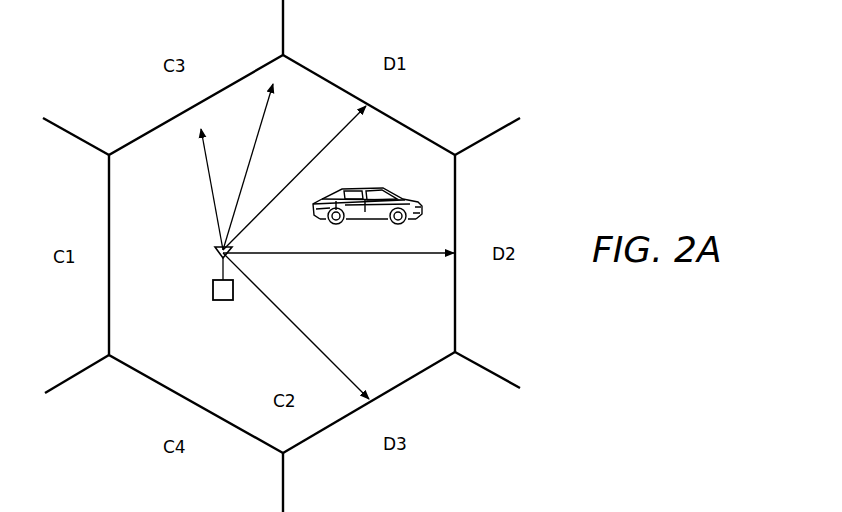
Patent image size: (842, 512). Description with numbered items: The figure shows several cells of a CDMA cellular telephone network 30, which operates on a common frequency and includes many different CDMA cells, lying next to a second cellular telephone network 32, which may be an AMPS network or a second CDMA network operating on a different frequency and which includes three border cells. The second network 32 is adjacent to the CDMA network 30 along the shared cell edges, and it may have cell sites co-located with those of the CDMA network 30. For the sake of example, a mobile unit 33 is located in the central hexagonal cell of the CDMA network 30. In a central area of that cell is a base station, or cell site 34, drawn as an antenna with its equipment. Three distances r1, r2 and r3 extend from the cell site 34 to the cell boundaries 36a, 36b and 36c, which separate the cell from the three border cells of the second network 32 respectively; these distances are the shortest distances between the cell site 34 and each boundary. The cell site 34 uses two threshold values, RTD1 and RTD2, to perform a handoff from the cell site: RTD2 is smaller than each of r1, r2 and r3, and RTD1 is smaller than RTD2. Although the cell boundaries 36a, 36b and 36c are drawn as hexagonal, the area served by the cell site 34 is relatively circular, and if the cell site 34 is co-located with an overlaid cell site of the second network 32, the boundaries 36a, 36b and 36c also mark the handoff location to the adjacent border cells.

The CDMA cellular telephone network 30 is at (133, 78).
The second cellular telephone network 32 is at (434, 72).
The mobile unit 33 is at (410, 201).
The cell site 34 is at (216, 254).
The cell boundary 36a is at (318, 72).
The cell boundary 36b is at (457, 307).
The cell boundary 36c is at (322, 432).
The first threshold value RTD1 is at (255, 143).
The second threshold value RTD2 is at (206, 176).
The distance r1 is at (324, 149).
The distance r2 is at (382, 256).
The distance r3 is at (322, 350).